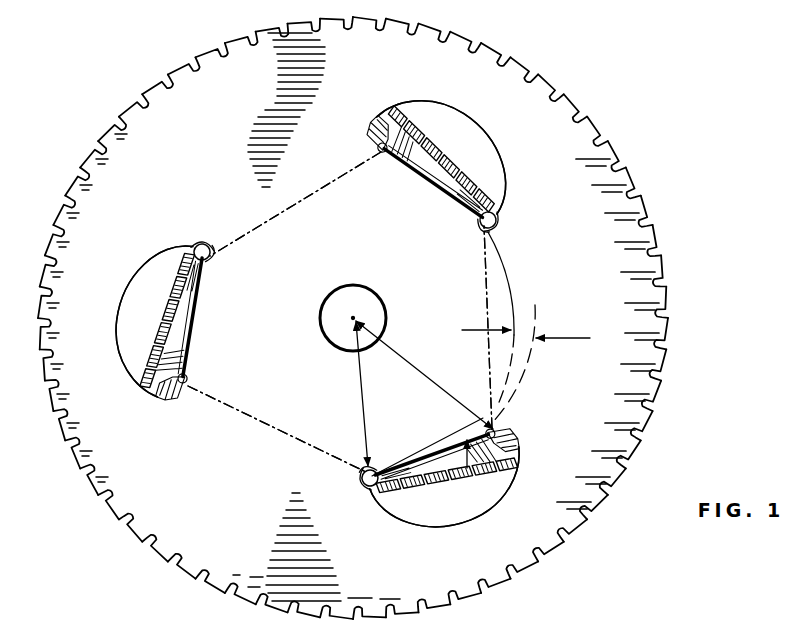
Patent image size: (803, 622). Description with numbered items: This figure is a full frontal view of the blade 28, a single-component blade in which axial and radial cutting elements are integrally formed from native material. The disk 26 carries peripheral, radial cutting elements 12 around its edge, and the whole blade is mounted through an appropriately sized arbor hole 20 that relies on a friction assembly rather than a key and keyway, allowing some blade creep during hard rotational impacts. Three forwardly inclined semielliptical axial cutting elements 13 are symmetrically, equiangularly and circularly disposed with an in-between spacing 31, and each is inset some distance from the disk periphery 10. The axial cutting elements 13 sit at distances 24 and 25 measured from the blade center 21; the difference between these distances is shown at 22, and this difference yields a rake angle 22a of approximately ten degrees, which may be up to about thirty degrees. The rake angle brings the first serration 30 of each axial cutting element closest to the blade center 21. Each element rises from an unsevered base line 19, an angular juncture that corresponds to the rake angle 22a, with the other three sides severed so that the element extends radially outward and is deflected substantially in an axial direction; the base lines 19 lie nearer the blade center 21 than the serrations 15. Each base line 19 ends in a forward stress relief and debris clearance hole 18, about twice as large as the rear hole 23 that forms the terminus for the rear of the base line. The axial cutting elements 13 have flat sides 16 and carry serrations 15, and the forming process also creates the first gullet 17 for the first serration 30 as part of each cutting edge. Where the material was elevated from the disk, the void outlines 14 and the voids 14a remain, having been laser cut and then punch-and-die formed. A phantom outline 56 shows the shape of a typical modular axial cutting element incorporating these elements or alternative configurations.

The disk periphery 10 is at (150, 88).
The radial cutting elements 12 is at (126, 108).
The disk 26 is at (90, 197).
The blade 28 is at (90, 500).
The arbor hole 20 is at (383, 303).
The blade center 21 is at (352, 318).
The distance 24 is at (357, 394).
The distance 25 is at (424, 375).
The difference between distances 22 is at (538, 319).
The rake angle 22a is at (453, 416).
The in-between spacing 31 is at (370, 312).
The phantom outline 56 is at (322, 198).
The void outlines 14 is at (438, 108).
The voids 14a is at (470, 143).
The serrations 15 is at (487, 181).
The sides 16 is at (415, 153).
The first gullet 17 is at (478, 222).
The forward stress relief and debris clearance holes 18 is at (497, 229).
The first serration 30 is at (504, 226).
The base lines 19 is at (446, 195).
The rear holes 23 is at (378, 149).
The axial cutting elements 13 is at (376, 120).